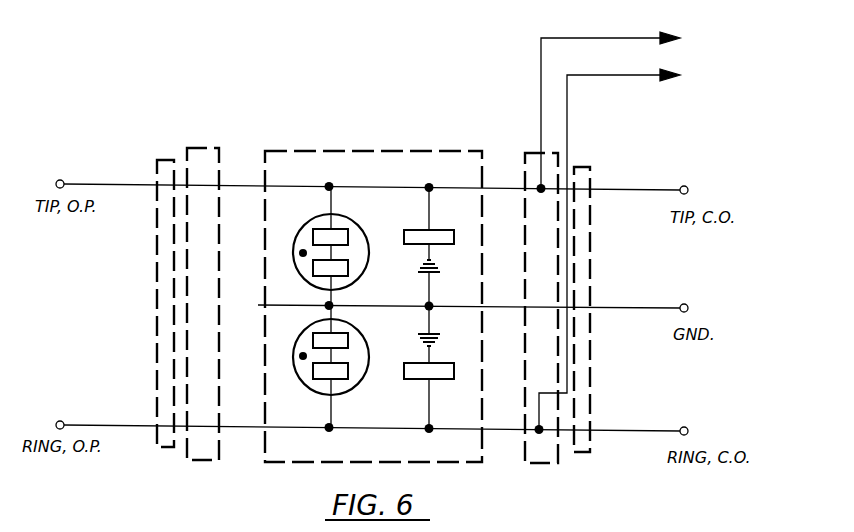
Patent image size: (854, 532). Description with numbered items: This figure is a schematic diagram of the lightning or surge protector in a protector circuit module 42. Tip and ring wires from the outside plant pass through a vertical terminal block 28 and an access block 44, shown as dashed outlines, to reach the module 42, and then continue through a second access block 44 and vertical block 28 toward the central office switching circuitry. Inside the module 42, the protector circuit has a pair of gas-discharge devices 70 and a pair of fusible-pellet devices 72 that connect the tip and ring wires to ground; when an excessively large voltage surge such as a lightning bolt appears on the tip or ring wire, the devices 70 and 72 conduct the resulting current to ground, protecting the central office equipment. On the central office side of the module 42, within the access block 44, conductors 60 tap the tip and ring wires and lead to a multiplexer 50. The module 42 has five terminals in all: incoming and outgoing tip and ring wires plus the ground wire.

The vertical terminal block 28 is at (160, 158).
The access block 44 is at (207, 146).
The protector circuit module 42 is at (368, 150).
The gas-discharge device 70 is at (354, 221).
The fusible-pellet device 72 is at (422, 256).
The conductor 60 is at (567, 86).
The multiplexer 50 is at (691, 56).